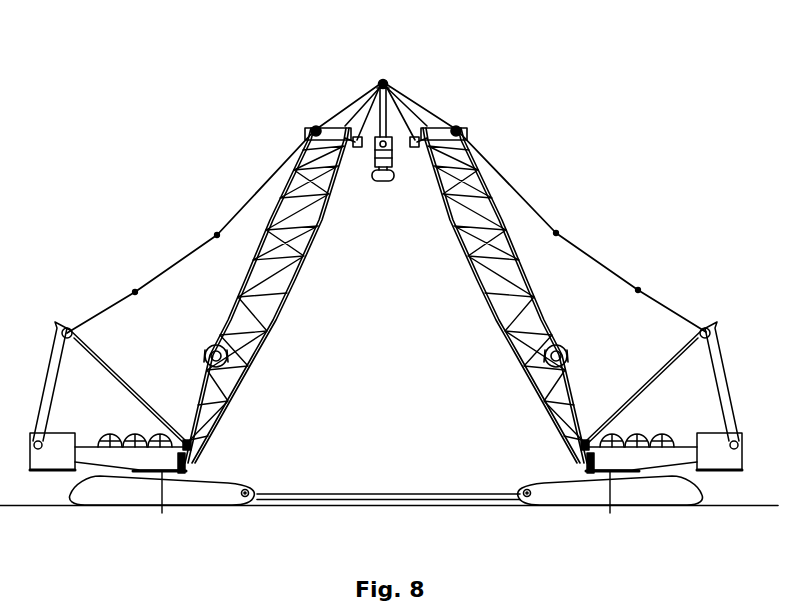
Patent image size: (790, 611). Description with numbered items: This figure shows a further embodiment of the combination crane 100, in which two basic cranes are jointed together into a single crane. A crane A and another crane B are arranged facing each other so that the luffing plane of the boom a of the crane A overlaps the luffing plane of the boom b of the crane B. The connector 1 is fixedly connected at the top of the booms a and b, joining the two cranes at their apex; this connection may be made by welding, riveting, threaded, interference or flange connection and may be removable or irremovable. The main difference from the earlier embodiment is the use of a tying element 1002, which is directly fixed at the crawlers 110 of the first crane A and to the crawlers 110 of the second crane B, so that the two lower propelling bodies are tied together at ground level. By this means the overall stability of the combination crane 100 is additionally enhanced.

The combination crane 100 is at (203, 59).
The connector 1 is at (394, 62).
The crane A is at (213, 288).
The crane B is at (597, 293).
The boom a is at (272, 316).
The boom b is at (500, 316).
The crawler 110 is at (199, 502).
The tying element 1002 is at (380, 495).